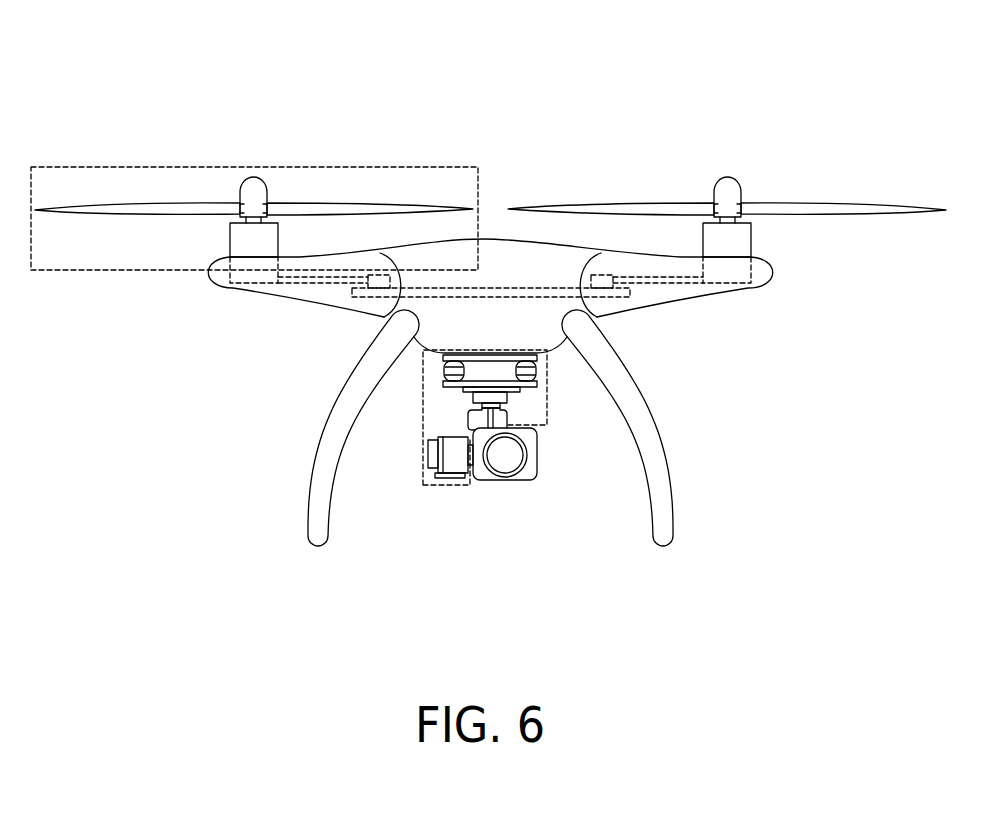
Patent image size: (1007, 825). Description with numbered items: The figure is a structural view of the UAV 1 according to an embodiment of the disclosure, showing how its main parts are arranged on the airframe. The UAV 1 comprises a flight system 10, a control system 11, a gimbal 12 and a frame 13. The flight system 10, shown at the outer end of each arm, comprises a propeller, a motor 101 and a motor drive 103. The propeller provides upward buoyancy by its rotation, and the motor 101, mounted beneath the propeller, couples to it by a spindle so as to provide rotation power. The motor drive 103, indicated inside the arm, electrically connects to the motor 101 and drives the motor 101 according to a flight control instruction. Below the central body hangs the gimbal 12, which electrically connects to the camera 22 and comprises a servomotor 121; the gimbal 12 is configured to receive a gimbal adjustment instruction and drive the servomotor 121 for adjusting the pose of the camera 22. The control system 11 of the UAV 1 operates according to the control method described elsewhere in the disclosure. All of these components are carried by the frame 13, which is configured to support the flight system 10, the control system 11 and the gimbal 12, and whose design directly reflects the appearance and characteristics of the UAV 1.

The UAV 1 is at (283, 59).
The flight system 10 is at (185, 167).
The motor 101 is at (240, 238).
The motor drive 103 is at (365, 292).
The frame 13 is at (493, 268).
The gimbal 12 is at (422, 425).
The servomotor 121 is at (452, 458).
The control system 11 is at (533, 465).
The camera 22 is at (503, 460).